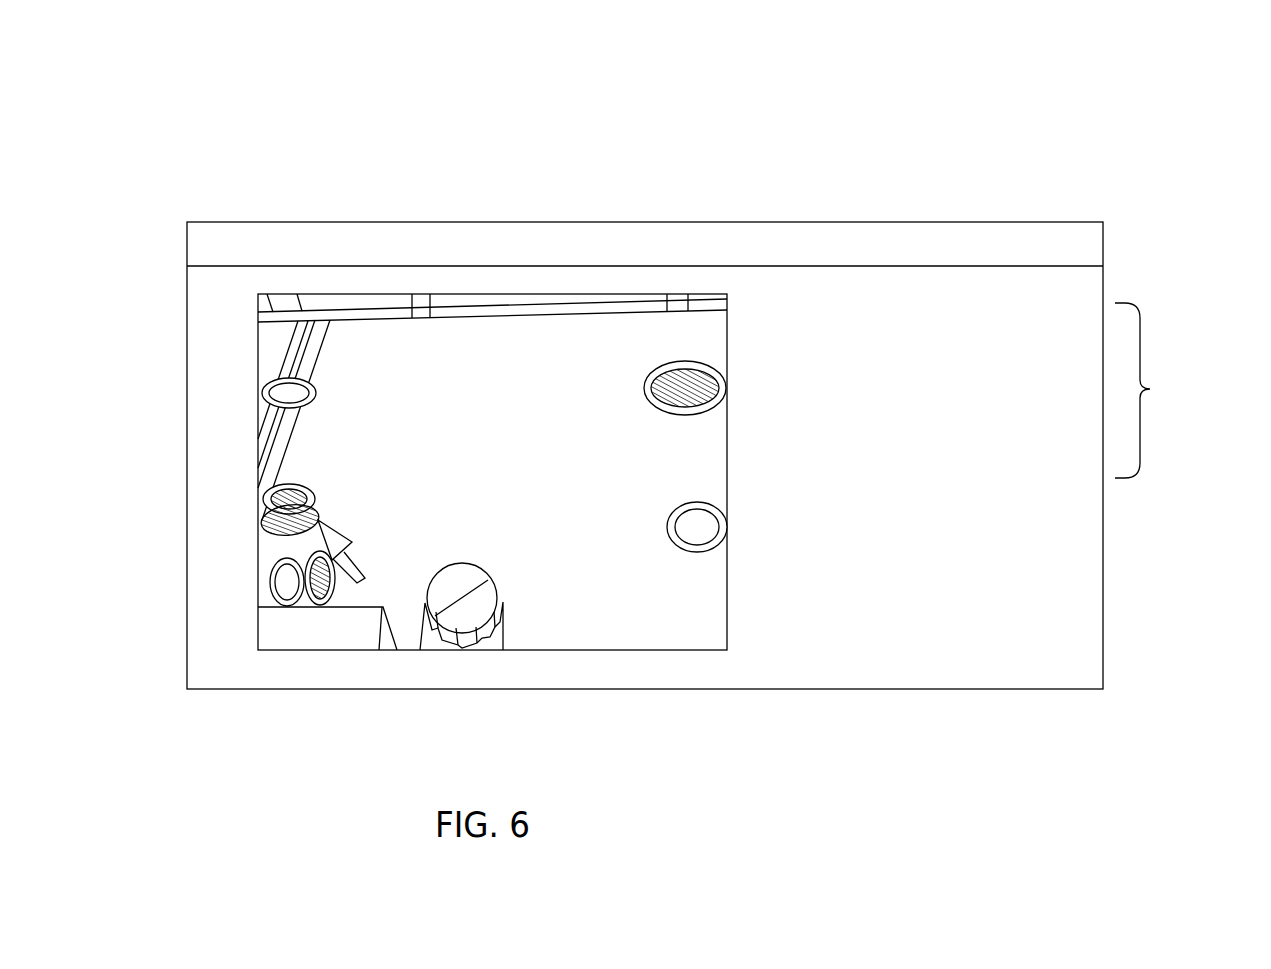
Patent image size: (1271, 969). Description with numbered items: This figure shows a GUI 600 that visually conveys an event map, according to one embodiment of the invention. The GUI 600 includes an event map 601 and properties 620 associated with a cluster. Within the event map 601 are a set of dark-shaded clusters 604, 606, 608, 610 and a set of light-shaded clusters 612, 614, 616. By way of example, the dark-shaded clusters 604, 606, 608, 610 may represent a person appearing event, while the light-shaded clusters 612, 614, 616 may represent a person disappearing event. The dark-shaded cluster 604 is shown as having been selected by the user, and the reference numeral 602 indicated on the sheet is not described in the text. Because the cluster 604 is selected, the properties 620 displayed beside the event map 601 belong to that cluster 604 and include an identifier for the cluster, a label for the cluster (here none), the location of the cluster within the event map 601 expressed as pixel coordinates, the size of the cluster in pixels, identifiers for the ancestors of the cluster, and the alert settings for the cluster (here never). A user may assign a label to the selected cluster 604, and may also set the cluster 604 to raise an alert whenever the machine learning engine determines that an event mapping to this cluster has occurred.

The GUI 600 is at (1243, 91).
The event map 601 is at (712, 673).
The map display area 602 is at (600, 617).
The dark-shaded cluster 604 is at (265, 512).
The dark-shaded cluster 606 is at (280, 492).
The dark-shaded cluster 608 is at (330, 600).
The dark-shaded cluster 610 is at (670, 388).
The light-shaded cluster 612 is at (285, 585).
The light-shaded cluster 614 is at (283, 392).
The light-shaded cluster 616 is at (698, 525).
The properties 620 is at (1150, 389).